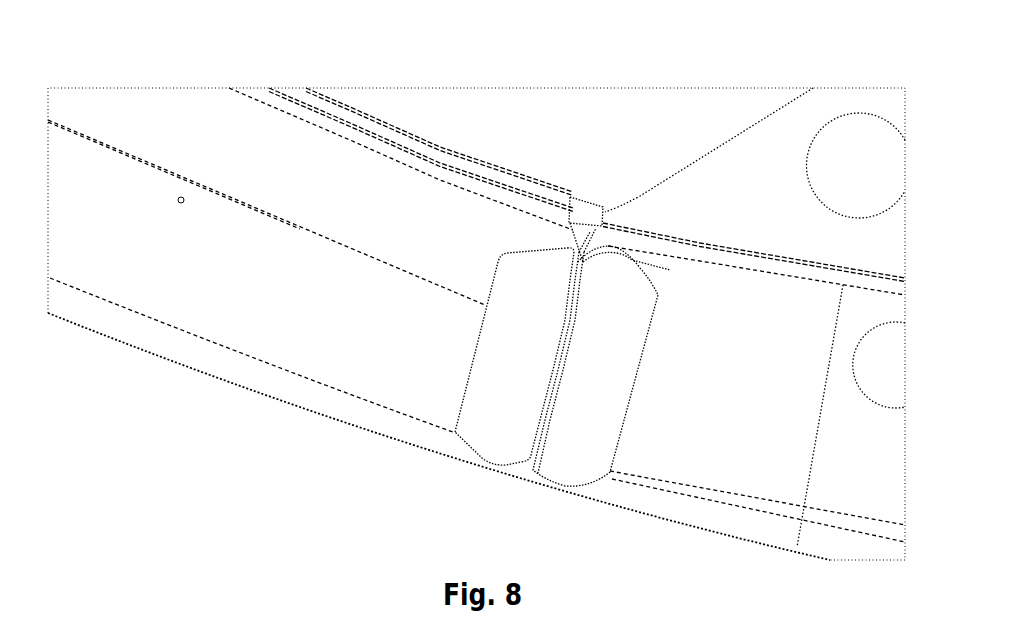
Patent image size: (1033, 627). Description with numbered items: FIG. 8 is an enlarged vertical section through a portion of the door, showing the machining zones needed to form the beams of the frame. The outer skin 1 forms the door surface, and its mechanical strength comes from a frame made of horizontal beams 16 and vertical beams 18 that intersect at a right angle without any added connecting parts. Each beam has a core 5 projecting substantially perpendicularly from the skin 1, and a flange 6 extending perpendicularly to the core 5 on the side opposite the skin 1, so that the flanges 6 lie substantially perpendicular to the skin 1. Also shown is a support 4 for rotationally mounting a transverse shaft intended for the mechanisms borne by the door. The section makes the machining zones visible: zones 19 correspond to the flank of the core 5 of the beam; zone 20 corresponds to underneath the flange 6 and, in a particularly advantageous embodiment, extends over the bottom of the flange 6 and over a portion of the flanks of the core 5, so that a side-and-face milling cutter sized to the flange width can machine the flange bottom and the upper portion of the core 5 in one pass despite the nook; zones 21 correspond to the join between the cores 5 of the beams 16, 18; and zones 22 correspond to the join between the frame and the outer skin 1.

The outer skin 1 is at (362, 433).
The support 4 is at (783, 121).
The core 5 is at (261, 183).
The flange 6 is at (483, 180).
The horizontal beam 16 is at (607, 178).
The vertical beam 18 is at (439, 109).
The machining zone of the core flank 19 is at (251, 364).
The machining zone underneath the flange 20 is at (266, 212).
The machining zone at the join between cores 21 is at (622, 366).
The machining zone at the join between frame and skin 22 is at (757, 481).